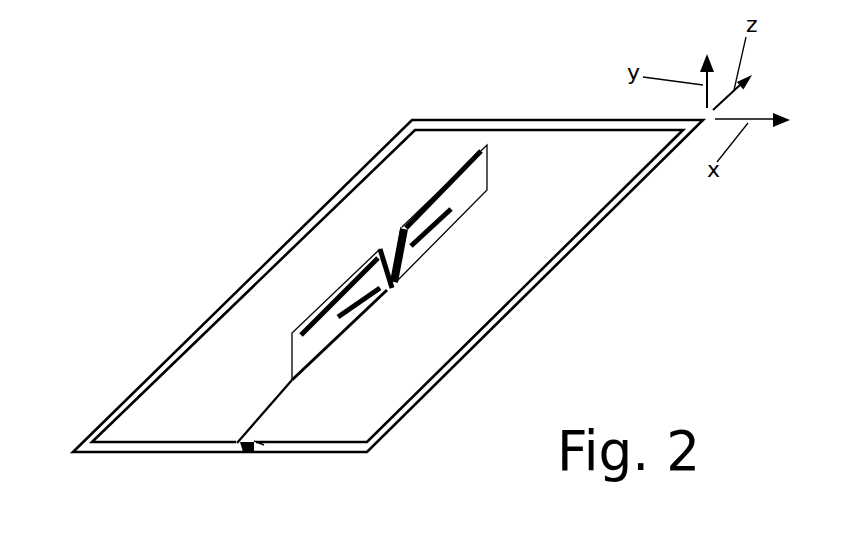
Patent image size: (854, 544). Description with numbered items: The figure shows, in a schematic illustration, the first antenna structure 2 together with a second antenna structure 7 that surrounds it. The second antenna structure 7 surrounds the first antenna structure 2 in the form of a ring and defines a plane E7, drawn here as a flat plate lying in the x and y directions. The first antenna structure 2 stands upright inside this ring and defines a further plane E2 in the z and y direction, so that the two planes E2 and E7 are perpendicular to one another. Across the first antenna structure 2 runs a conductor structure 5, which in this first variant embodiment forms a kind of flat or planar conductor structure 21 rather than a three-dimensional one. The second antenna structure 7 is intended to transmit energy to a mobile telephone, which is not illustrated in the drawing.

The first antenna structure 2 is at (425, 229).
The plane E2 is at (481, 186).
The conductor structure 5 is at (457, 254).
The planar conductor structure 21 is at (433, 238).
The second antenna structure 7 is at (400, 286).
The plane E7 is at (593, 180).